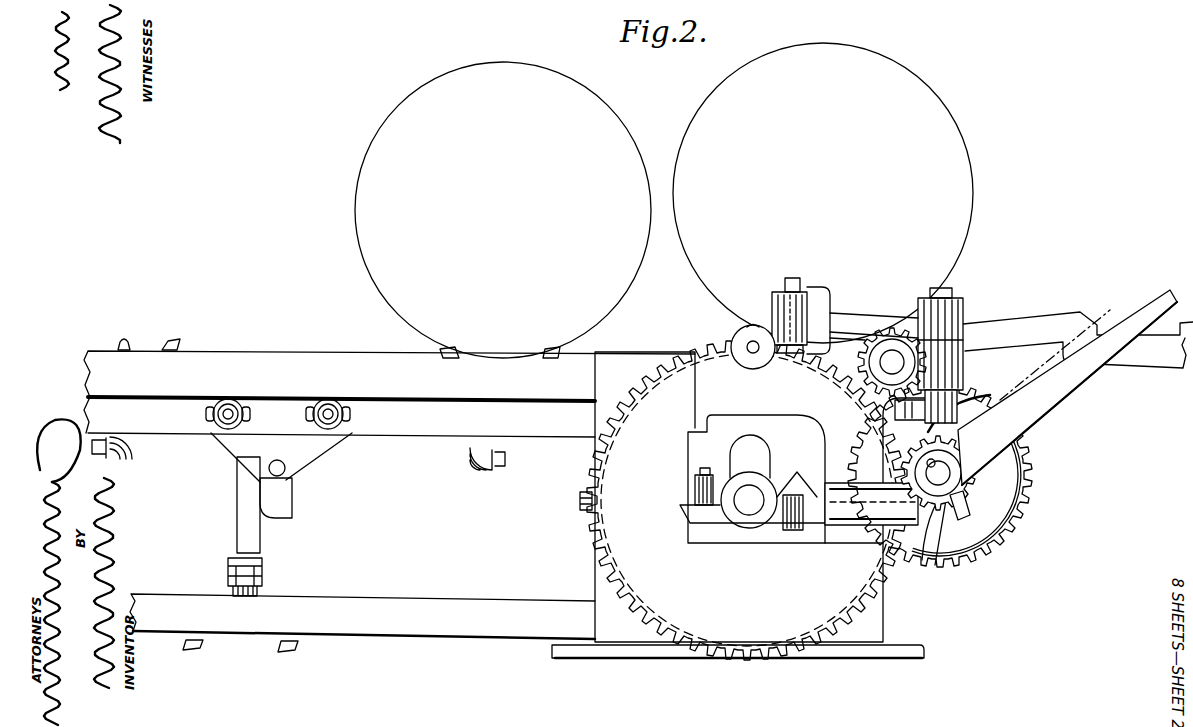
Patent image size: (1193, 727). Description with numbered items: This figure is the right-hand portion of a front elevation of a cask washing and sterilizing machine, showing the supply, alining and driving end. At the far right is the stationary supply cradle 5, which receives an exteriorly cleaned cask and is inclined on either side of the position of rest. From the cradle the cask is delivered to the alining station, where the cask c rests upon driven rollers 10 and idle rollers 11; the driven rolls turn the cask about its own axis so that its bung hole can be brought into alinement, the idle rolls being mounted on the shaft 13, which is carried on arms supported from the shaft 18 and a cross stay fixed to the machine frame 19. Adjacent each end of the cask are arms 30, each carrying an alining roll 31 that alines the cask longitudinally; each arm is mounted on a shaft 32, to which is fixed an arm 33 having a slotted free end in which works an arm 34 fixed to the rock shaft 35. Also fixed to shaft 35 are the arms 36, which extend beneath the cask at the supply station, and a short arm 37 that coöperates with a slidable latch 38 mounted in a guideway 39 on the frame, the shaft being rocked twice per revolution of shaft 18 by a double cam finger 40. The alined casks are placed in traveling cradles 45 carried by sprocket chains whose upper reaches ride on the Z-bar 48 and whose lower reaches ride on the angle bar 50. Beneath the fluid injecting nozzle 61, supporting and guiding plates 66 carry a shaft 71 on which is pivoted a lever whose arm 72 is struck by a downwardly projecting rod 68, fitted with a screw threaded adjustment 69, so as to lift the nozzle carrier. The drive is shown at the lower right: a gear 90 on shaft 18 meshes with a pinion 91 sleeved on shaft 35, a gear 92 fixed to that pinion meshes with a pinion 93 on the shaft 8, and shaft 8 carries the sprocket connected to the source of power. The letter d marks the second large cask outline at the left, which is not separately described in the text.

The supply station cradle 5 is at (1050, 318).
The shaft 8 is at (892, 350).
The driven rollers 10 is at (855, 340).
The idle rollers 11 is at (731, 343).
The shaft 13 is at (745, 334).
The shaft 18 is at (738, 488).
The machine frame 19 is at (883, 628).
The arms 30 is at (828, 289).
The alining roll 31 is at (770, 303).
The shaft 32 is at (948, 298).
The arms 33 is at (978, 395).
The arms 34 is at (914, 431).
The shaft 35 is at (956, 464).
The arms 36 is at (1066, 399).
The short arm 37 is at (960, 552).
The latch 38 is at (936, 513).
The guideway 39 is at (843, 508).
The cam finger 40 is at (777, 470).
The traveling cradles 45 is at (180, 341).
The Z-bar 48 is at (323, 352).
The angle bar 50 is at (409, 601).
The fluid injecting nozzle 61 is at (131, 341).
The supporting and guiding plates 66 is at (326, 456).
The downwardly projecting rod 68 is at (237, 528).
The screw threaded adjustment 69 is at (263, 587).
The shaft 71 is at (286, 471).
The lever arm 72 is at (292, 511).
The gear 90 is at (597, 531).
The pinion 91 is at (969, 492).
The gear 92 is at (1010, 528).
The pinion 93 is at (868, 353).
The cask at alining station c is at (960, 121).
The roll d is at (611, 113).